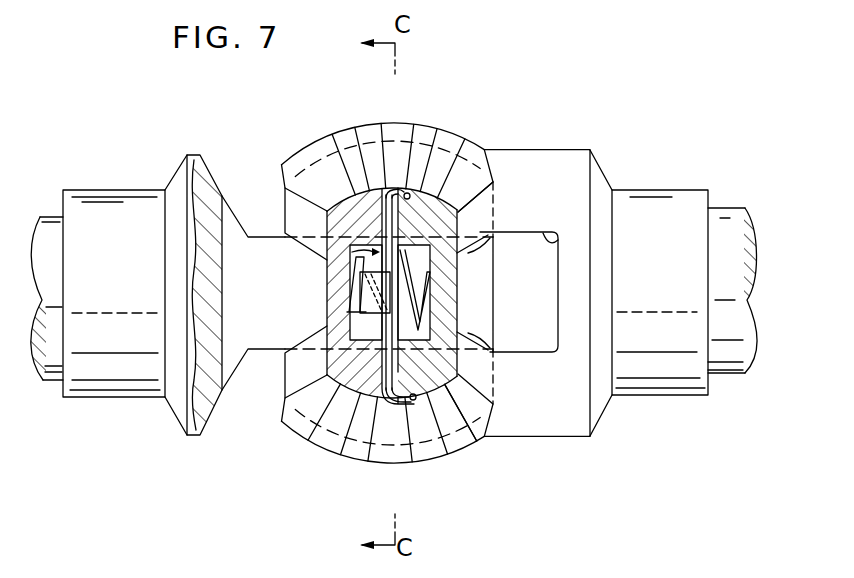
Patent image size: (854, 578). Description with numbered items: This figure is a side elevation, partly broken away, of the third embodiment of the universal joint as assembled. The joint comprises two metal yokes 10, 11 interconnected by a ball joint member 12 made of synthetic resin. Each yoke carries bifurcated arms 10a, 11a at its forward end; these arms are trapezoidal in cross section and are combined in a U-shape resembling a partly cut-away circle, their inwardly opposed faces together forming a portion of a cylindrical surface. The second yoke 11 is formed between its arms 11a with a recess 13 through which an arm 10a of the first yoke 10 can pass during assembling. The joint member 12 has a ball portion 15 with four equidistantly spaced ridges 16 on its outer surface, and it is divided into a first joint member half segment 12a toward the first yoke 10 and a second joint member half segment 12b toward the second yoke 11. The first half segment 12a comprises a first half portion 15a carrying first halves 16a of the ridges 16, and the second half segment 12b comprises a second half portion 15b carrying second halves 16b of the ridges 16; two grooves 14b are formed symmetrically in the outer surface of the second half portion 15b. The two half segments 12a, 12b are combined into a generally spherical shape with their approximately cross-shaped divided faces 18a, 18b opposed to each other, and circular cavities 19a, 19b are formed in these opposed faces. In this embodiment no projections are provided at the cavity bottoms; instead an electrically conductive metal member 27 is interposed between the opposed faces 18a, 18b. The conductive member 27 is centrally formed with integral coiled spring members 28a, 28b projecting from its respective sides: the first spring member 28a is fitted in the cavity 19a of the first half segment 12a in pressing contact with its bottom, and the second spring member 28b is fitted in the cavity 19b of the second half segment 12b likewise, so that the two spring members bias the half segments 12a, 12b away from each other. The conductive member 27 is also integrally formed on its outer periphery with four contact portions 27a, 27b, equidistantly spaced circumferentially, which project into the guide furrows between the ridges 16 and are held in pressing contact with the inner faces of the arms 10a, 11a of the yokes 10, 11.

The first yoke 10 is at (55, 388).
The bifurcated arms of first yoke 10a is at (284, 353).
The second yoke 11 is at (650, 397).
The bifurcated arms of second yoke 11a is at (400, 122).
The ball joint member 12 is at (336, 196).
The first joint member half segment 12a is at (331, 397).
The second joint member half segment 12b is at (463, 391).
The recess 13 is at (242, 232).
The grooves 14b is at (424, 205).
The ball portion 15 is at (337, 194).
The first half portion 15a is at (372, 402).
The second half portion 15b is at (452, 185).
The ridges 16 is at (292, 220).
The first halves of ridges 16a is at (283, 188).
The second halves of ridges 16b is at (513, 234).
The divided face of first half segment 18a is at (384, 190).
The divided face of second half segment 18b is at (389, 406).
The circular cavity 19a is at (327, 327).
The circular cavity 19b is at (465, 218).
The electrically conductive member 27 is at (348, 252).
The contact portions 27a is at (350, 300).
The contact portions 27b is at (402, 190).
The first spring member 28a is at (348, 280).
The second spring member 28b is at (457, 308).